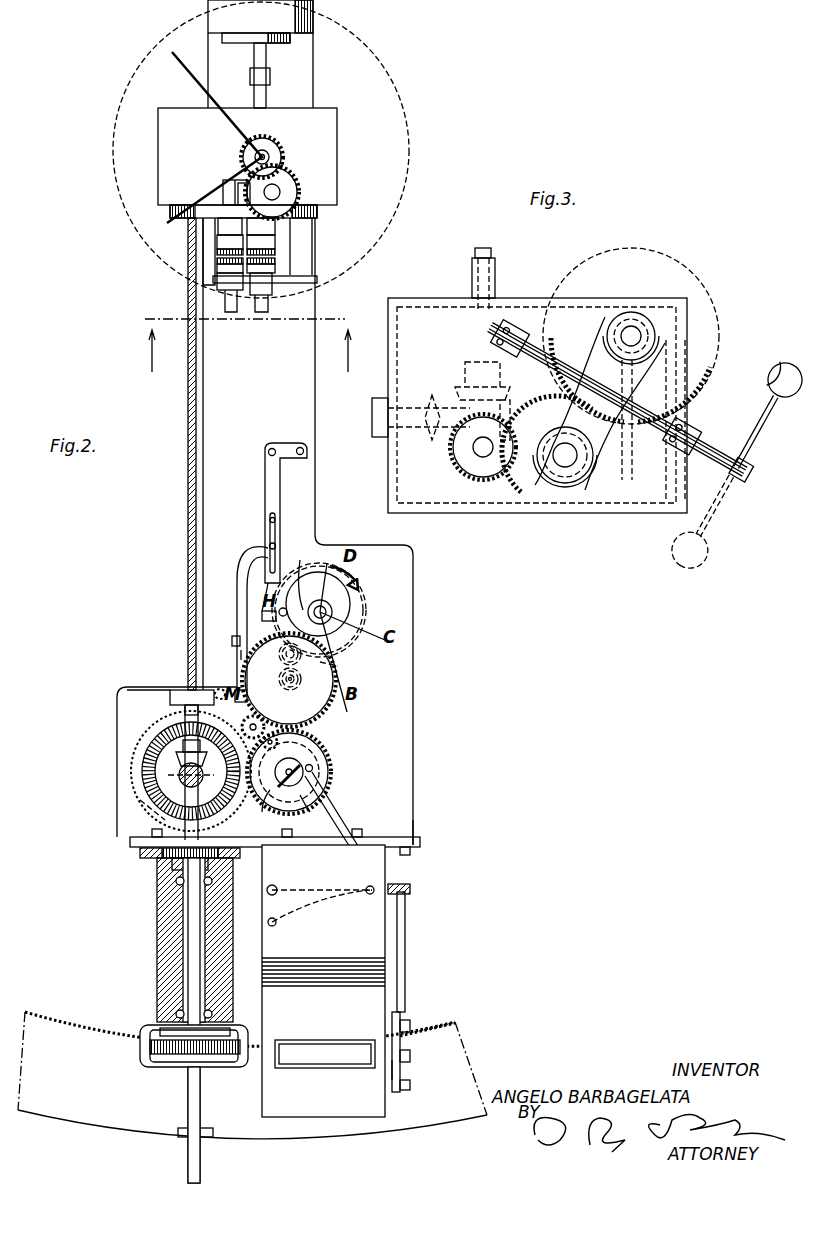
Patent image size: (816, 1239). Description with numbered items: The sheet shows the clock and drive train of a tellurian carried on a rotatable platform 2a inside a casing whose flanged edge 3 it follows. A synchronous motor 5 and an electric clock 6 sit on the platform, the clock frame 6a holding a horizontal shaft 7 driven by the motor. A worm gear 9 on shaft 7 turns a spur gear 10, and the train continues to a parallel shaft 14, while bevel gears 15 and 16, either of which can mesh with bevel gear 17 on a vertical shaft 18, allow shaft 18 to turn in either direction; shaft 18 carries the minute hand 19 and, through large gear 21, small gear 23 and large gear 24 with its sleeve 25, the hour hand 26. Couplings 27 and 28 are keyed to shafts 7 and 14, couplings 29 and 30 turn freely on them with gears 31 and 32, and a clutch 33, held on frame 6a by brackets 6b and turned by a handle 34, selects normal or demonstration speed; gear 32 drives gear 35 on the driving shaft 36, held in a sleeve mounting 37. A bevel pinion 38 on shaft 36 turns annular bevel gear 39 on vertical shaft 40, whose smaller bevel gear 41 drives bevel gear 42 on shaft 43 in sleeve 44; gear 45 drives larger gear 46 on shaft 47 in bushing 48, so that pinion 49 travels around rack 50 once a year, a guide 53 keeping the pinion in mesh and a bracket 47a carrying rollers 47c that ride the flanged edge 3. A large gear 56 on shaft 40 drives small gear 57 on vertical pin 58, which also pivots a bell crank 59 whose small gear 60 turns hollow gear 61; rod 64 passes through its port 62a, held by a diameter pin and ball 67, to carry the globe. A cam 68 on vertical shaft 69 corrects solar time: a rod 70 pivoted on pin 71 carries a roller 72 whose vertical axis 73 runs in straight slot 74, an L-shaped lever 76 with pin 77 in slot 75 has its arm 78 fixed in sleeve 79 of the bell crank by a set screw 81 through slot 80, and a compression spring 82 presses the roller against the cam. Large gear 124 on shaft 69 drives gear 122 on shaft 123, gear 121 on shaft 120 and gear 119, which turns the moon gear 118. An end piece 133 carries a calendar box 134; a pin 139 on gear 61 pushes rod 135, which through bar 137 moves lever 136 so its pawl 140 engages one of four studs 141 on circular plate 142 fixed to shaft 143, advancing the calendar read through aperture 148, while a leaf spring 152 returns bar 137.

In FIG. 2, the rotatable platform 2a is at (413, 766).
In FIG. 2, the flanged edge 3 is at (437, 1145).
In FIG. 2, the synchronous motor 5 is at (305, 23).
In FIG. 2, the electric clock 6 is at (405, 102).
In FIG. 2, the frame 6a is at (330, 112).
In FIG. 3, the frame 6a is at (622, 513).
In FIG. 2, the brackets 6b is at (203, 258).
In FIG. 2, the horizontal shaft 7 is at (266, 102).
In FIG. 3, the horizontal shaft 7 is at (633, 325).
In FIG. 3, the worm gear 9 is at (656, 338).
In FIG. 3, the spur gear 10 is at (638, 482).
In FIG. 2, the shaft 14 is at (235, 318).
In FIG. 3, the shaft 14 is at (565, 468).
In FIG. 3, the bevel gear 15 is at (520, 410).
In FIG. 3, the bevel gear 16 is at (432, 400).
In FIG. 3, the bevel gear 17 is at (470, 380).
In FIG. 2, the vertical shaft 18 is at (272, 148).
In FIG. 3, the vertical shaft 18 is at (483, 248).
In FIG. 2, the minute hand 19 is at (190, 74).
In FIG. 2, the large gear 21 is at (292, 181).
In FIG. 2, the small gear 23 is at (299, 193).
In FIG. 2, the large gear 24 is at (286, 160).
In FIG. 3, the sleeve 25 is at (496, 281).
In FIG. 2, the hour hand 26 is at (226, 200).
In FIG. 2, the coupling 27 is at (275, 263).
In FIG. 3, the coupling 27 is at (655, 346).
In FIG. 2, the coupling 28 is at (220, 268).
In FIG. 3, the coupling 28 is at (548, 470).
In FIG. 2, the coupling 29 is at (275, 242).
In FIG. 2, the coupling 30 is at (217, 240).
In FIG. 2, the gear 31 is at (317, 214).
In FIG. 3, the gear 31 is at (718, 313).
In FIG. 3, the gear 32 is at (546, 500).
In FIG. 3, the clutch 33 is at (600, 348).
In FIG. 3, the handle 34 is at (785, 364).
In FIG. 2, the gear 35 is at (170, 210).
In FIG. 3, the gear 35 is at (470, 470).
In FIG. 2, the driving shaft 36 is at (192, 420).
In FIG. 3, the driving shaft 36 is at (480, 470).
In FIG. 2, the sleeve mounting 37 is at (172, 703).
In FIG. 2, the bevel pinion 38 is at (165, 716).
In FIG. 2, the annular bevel gear 39 is at (110, 791).
In FIG. 2, the vertical shaft 40 is at (195, 790).
In FIG. 2, the smaller bevel gear 41 is at (180, 781).
In FIG. 2, the bevel gear 42 is at (178, 762).
In FIG. 2, the shaft 43 is at (180, 812).
In FIG. 2, the sleeve 44 is at (150, 843).
In FIG. 2, the gear 45 is at (190, 866).
In FIG. 2, the larger gear 46 is at (185, 859).
In FIG. 2, the shaft 47 is at (190, 961).
In FIG. 2, the bracket 47a is at (190, 1125).
In FIG. 2, the roller 47c is at (213, 1132).
In FIG. 2, the bushing 48 is at (165, 938).
In FIG. 2, the pinion 49 is at (172, 1052).
In FIG. 2, the rack 50 is at (440, 1024).
In FIG. 2, the guide 53 is at (150, 1066).
In FIG. 2, the large gear 56 is at (132, 740).
In FIG. 2, the small gear 57 is at (275, 740).
In FIG. 2, the vertical pin 58 is at (253, 715).
In FIG. 2, the bell crank 59 is at (200, 692).
In FIG. 2, the small gear 60 is at (326, 745).
In FIG. 2, the hollow gear 61 is at (322, 770).
In FIG. 2, the port 62a is at (302, 768).
In FIG. 2, the rod 64 is at (272, 796).
In FIG. 2, the diameter pin and ball 67 is at (308, 802).
In FIG. 2, the cam 68 is at (346, 600).
In FIG. 2, the vertical shaft 69 is at (333, 612).
In FIG. 2, the rod 70 is at (270, 476).
In FIG. 2, the pin 71 is at (305, 443).
In FIG. 2, the roller 72 is at (262, 618).
In FIG. 2, the vertical axis 73 is at (255, 607).
In FIG. 2, the straight slot 74 is at (299, 575).
In FIG. 2, the slot 75 is at (271, 520).
In FIG. 2, the L-shaped lever 76 is at (237, 568).
In FIG. 2, the pin 77 is at (270, 545).
In FIG. 2, the arm 78 is at (224, 641).
In FIG. 2, the sleeve 79 is at (240, 652).
In FIG. 2, the slot 80 is at (284, 656).
In FIG. 2, the set screw 81 is at (229, 681).
In FIG. 2, the compression spring 82 is at (175, 695).
In FIG. 2, the moon gear 118 is at (312, 790).
In FIG. 2, the gear 119 is at (338, 712).
In FIG. 2, the shaft 120 is at (300, 685).
In FIG. 2, the gear 121 is at (290, 683).
In FIG. 2, the gear 122 is at (298, 680).
In FIG. 2, the shaft 123 is at (338, 666).
In FIG. 2, the large gear 124 is at (326, 565).
In FIG. 2, the solid end piece 133 is at (420, 845).
In FIG. 2, the calendar box 134 is at (375, 1002).
In FIG. 2, the rod 135 is at (413, 830).
In FIG. 2, the lever 136 is at (405, 930).
In FIG. 2, the bar 137 is at (321, 890).
In FIG. 2, the pin 139 is at (312, 771).
In FIG. 2, the pawl 140 is at (405, 1038).
In FIG. 2, the studs 141 is at (410, 1089).
In FIG. 2, the circular plate 142 is at (410, 1076).
In FIG. 2, the shaft 143 is at (392, 1070).
In FIG. 2, the aperture 148 is at (308, 1068).
In FIG. 2, the leaf spring 152 is at (322, 908).